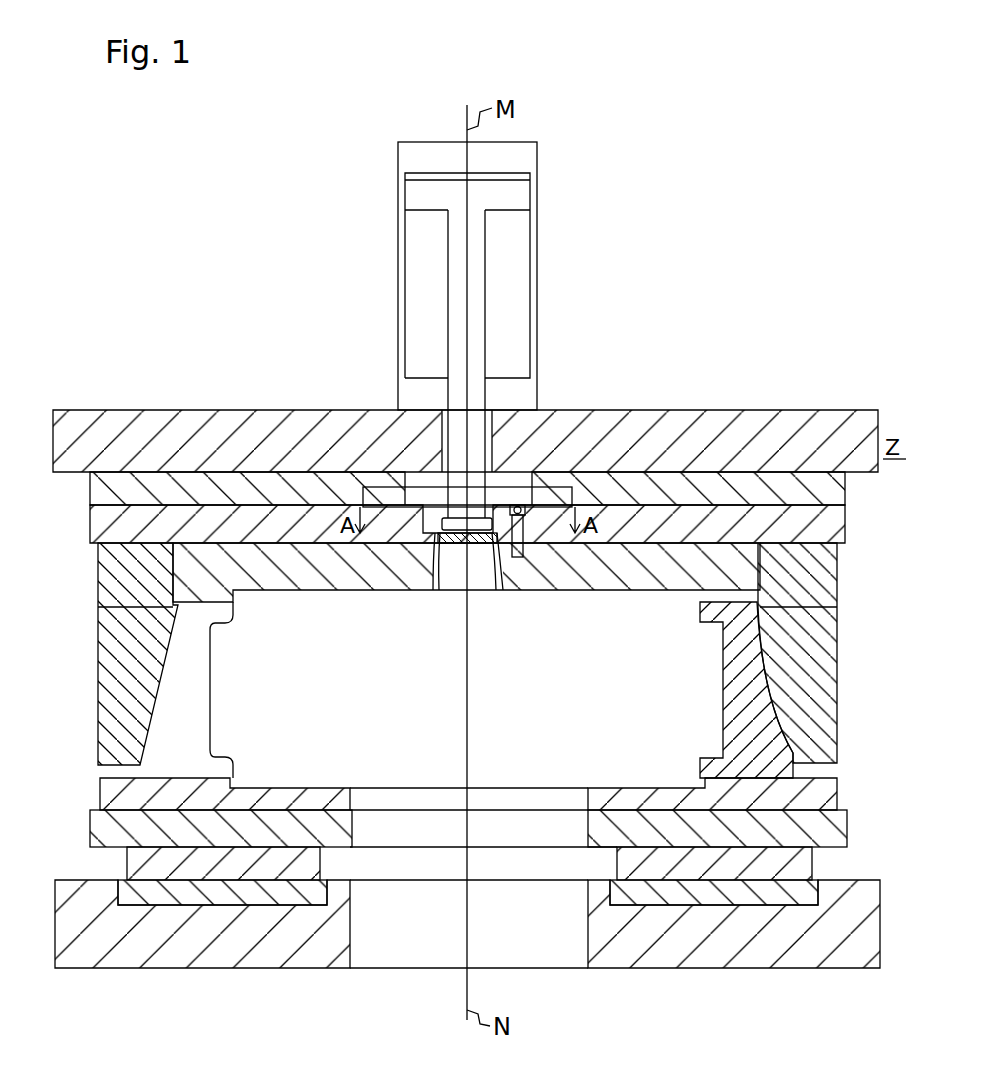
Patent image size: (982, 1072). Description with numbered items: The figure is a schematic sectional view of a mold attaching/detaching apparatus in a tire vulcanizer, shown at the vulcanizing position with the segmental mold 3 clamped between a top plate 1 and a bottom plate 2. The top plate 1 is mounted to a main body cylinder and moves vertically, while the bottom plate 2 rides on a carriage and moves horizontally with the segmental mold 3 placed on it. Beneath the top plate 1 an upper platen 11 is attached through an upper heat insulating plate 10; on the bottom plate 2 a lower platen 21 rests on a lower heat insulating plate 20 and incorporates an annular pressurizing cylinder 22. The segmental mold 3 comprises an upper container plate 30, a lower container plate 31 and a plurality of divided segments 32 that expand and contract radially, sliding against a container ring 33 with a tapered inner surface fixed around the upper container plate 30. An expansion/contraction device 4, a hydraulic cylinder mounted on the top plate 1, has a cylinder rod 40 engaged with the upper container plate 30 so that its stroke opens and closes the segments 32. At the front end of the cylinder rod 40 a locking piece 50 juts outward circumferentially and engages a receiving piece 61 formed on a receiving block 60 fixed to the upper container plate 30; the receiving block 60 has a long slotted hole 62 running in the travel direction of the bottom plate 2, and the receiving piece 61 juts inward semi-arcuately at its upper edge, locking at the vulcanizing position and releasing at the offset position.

The top plate 1 is at (748, 410).
The bottom plate 2 is at (718, 955).
The segmental mold 3 is at (845, 632).
The expansion/contraction device 4 is at (522, 277).
The upper heat insulating plate 10 is at (90, 492).
The upper platen 11 is at (90, 526).
The lower heat insulating plate 20 is at (127, 864).
The lower platen 21 is at (90, 830).
The annular pressurizing cylinder 22 is at (220, 905).
The upper container plate 30 is at (628, 585).
The lower container plate 31 is at (315, 790).
The divided segments 32 is at (207, 692).
The container ring 33 is at (98, 690).
The cylinder rod 40 is at (448, 442).
The locking piece 50 is at (488, 545).
The receiving block 60 is at (407, 541).
The receiving piece 61 is at (495, 505).
The slotted hole 62 is at (439, 545).